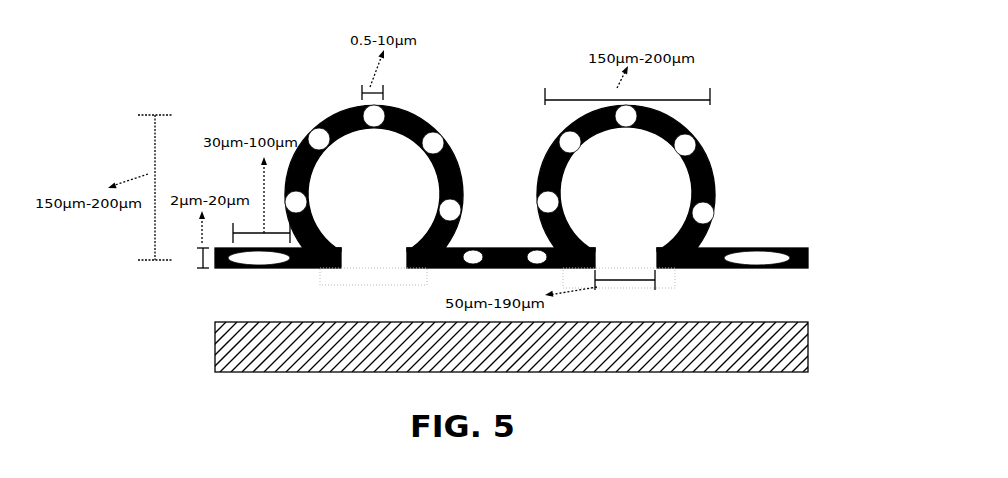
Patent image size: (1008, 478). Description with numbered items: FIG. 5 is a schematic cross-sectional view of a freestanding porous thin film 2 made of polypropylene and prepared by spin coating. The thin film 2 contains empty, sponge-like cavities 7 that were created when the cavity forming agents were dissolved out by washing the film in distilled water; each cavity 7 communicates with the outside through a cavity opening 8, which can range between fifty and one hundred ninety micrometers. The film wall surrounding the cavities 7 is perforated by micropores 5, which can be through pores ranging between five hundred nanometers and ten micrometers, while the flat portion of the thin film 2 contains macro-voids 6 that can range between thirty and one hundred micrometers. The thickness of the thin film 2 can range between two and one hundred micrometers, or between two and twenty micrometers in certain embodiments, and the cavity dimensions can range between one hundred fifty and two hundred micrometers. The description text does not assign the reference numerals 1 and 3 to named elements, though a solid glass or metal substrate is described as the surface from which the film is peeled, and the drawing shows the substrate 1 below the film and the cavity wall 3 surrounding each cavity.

The substrate 1 is at (808, 347).
The porous thin film 2 is at (809, 262).
The tubular wall 3 is at (712, 172).
The micropores 5 is at (690, 147).
The macro-voids 6 is at (760, 261).
The empty cavities 7 is at (650, 192).
The cavity opening 8 is at (625, 262).